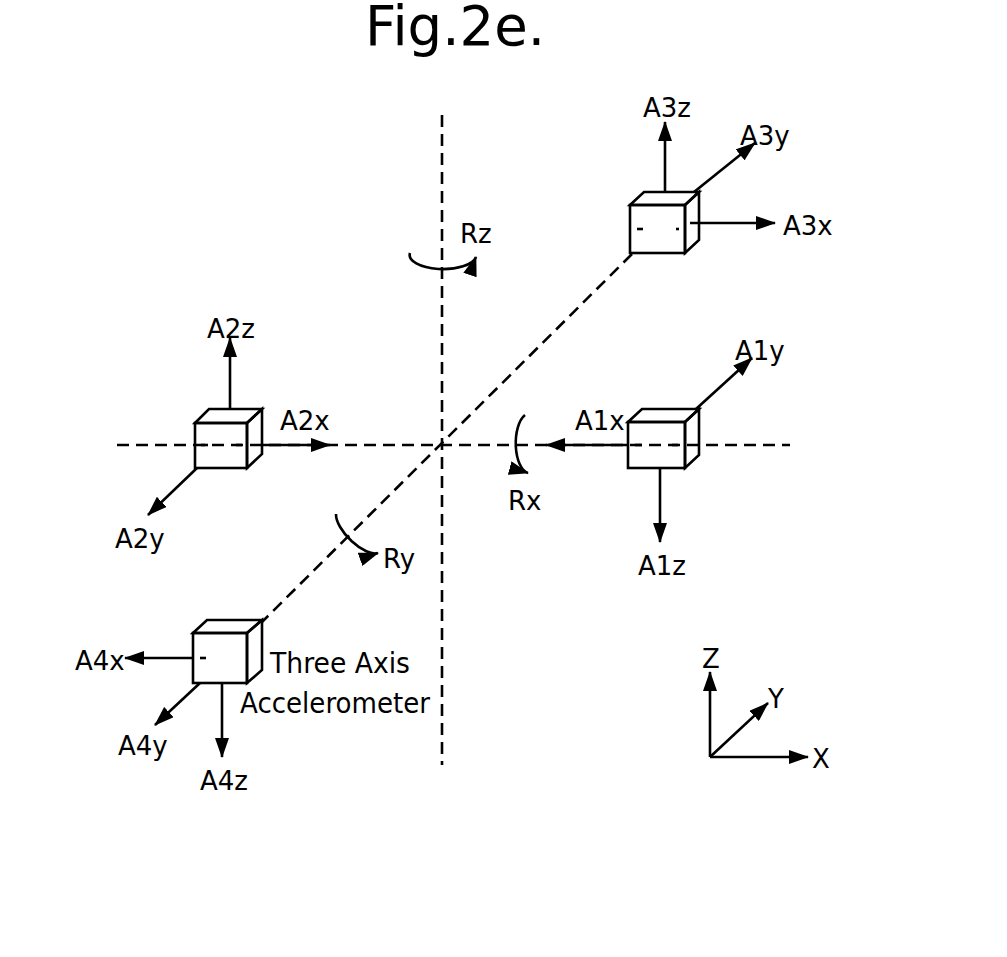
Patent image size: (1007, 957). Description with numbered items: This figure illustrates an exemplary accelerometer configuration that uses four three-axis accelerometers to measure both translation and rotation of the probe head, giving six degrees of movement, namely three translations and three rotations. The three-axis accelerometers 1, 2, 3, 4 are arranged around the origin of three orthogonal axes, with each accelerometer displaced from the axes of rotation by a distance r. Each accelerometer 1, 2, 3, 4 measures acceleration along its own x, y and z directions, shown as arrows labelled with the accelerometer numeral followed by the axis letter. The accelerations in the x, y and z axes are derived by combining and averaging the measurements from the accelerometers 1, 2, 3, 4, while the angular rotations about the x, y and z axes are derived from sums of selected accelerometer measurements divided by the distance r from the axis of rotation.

The three-axis accelerometer 1 is at (648, 462).
The three-axis accelerometer 2 is at (212, 463).
The three-axis accelerometer 3 is at (649, 246).
The three-axis accelerometer 4 is at (213, 675).